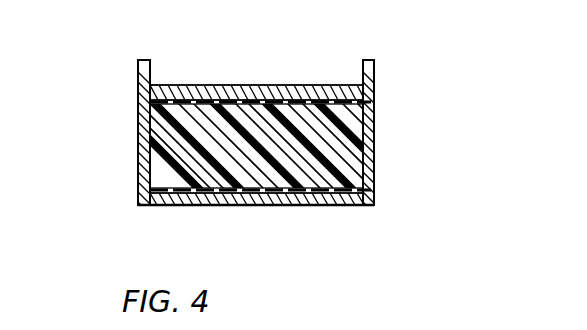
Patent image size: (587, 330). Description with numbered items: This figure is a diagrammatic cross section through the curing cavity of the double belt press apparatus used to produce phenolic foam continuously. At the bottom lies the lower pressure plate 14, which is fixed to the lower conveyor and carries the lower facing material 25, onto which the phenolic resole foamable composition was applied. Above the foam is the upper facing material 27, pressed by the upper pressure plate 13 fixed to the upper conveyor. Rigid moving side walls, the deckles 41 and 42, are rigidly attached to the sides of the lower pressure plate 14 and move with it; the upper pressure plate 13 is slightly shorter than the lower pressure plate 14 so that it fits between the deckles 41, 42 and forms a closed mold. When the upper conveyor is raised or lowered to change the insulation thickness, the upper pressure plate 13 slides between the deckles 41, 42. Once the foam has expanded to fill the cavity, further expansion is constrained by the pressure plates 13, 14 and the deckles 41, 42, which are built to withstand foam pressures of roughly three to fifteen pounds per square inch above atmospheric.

The upper pressure plate 13 is at (232, 86).
The lower pressure plate 14 is at (264, 206).
The lower facing material 25 is at (358, 190).
The upper facing material 27 is at (357, 103).
The deckle 41 is at (375, 139).
The deckle 42 is at (138, 137).